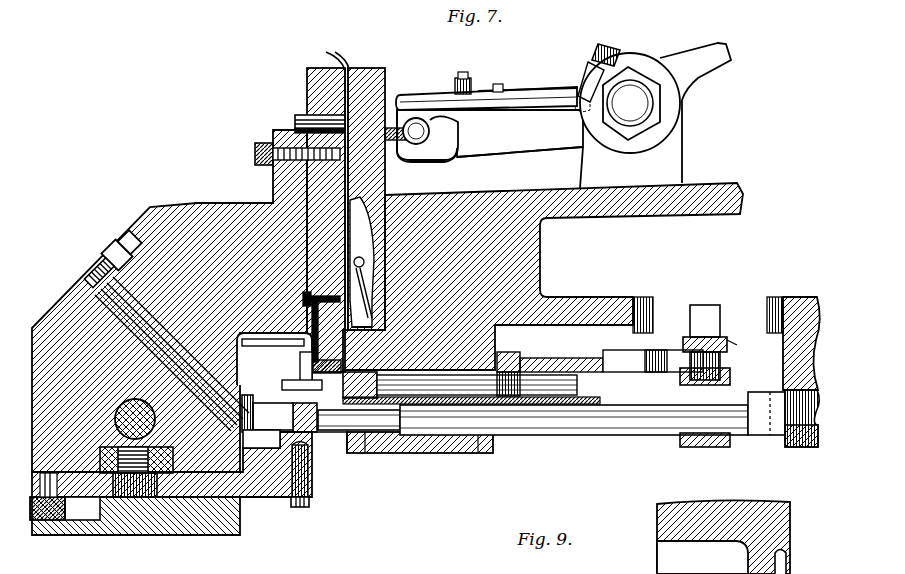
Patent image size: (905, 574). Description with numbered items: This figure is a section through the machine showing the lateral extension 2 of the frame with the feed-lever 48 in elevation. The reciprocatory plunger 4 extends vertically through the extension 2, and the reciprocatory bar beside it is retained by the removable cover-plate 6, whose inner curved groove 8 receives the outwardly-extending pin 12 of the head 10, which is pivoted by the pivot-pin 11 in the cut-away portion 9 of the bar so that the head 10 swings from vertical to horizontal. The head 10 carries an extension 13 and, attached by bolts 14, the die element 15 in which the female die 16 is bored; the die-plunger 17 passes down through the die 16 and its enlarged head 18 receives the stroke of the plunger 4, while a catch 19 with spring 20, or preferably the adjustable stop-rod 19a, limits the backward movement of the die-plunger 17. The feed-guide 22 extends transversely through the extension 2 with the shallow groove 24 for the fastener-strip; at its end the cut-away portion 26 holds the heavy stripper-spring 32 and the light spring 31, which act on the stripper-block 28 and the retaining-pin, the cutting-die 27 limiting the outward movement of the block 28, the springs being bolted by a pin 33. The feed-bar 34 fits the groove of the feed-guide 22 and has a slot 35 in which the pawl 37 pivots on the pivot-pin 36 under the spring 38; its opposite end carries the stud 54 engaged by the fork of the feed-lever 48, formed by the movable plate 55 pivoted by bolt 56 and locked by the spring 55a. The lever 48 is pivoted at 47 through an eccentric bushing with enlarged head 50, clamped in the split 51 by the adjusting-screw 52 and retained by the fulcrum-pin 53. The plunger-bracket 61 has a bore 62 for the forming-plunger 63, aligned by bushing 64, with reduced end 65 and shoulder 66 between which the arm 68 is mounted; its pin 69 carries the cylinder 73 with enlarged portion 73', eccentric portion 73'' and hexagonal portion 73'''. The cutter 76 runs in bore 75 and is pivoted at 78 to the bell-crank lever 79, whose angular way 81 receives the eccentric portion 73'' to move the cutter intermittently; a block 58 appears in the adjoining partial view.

In FIG. 7, the lateral extension 2 is at (190, 214).
In FIG. 7, the reciprocatory plunger 4 is at (115, 419).
In FIG. 7, the removable cover-plate 6 is at (221, 522).
In FIG. 7, the curved groove 8 is at (82, 520).
In FIG. 7, the cut-away portion 9 is at (165, 500).
In FIG. 7, the head 10 is at (243, 484).
In FIG. 7, the pivot-pin 11 is at (127, 497).
In FIG. 7, the outwardly-extending pin 12 is at (50, 522).
In FIG. 7, the extension 13 is at (272, 497).
In FIG. 7, the bolts 14 is at (309, 508).
In FIG. 7, the die element 15 is at (318, 455).
In FIG. 7, the female die 16 is at (320, 437).
In FIG. 7, the die-plunger 17 is at (242, 402).
In FIG. 7, the enlarged head 18 is at (259, 445).
In FIG. 7, the catch 19 is at (285, 404).
In FIG. 7, the adjustable stop-rod 19a is at (115, 248).
In FIG. 7, the spring 20 is at (296, 406).
In FIG. 7, the feed-guide 22 is at (318, 97).
In FIG. 7, the shallow groove 24 is at (345, 72).
In FIG. 7, the cut-away portion 26 is at (311, 312).
In FIG. 7, the cutting-die 27 is at (296, 388).
In FIG. 7, the stripper-block 28 is at (300, 360).
In FIG. 7, the light flat spring 31 is at (304, 342).
In FIG. 7, the stripper-spring 32 is at (274, 359).
In FIG. 7, the pin 33 is at (303, 284).
In FIG. 7, the feed-bar 34 is at (382, 84).
In FIG. 7, the slot 35 is at (386, 188).
In FIG. 7, the pivot-pin 36 is at (375, 250).
In FIG. 7, the pawl 37 is at (365, 264).
In FIG. 7, the spring 38 is at (372, 290).
In FIG. 7, the pivot 47 is at (681, 128).
In FIG. 7, the feed-lever 48 is at (542, 145).
In FIG. 7, the enlarged head 50 is at (650, 134).
In FIG. 7, the split 51 is at (582, 88).
In FIG. 7, the adjusting-screw 52 is at (596, 48).
In FIG. 7, the fulcrum-pin 53 is at (630, 120).
In FIG. 7, the round-headed stud 54 is at (433, 146).
In FIG. 7, the movable plate 55 is at (482, 100).
In FIG. 7, the spring 55a is at (522, 90).
In FIG. 7, the bolt 56 is at (465, 78).
In FIG. 9, the block 58 is at (702, 537).
In FIG. 7, the plunger-bracket 61 is at (444, 434).
In FIG. 7, the bore 62 is at (481, 442).
In FIG. 7, the forming-plunger 63 is at (549, 436).
In FIG. 7, the bushing 64 is at (386, 437).
In FIG. 7, the shoulder 65 is at (373, 437).
In FIG. 7, the shoulder 66 is at (762, 437).
In FIG. 7, the arm 68 is at (706, 448).
In FIG. 7, the laterally-extending pin 69 is at (721, 365).
In FIG. 7, the cylinder 73 is at (728, 347).
In FIG. 7, the round enlarged portion 73' is at (726, 379).
In FIG. 7, the eccentric portion 73'' is at (762, 357).
In FIG. 7, the hexagonal portion 73''' is at (730, 321).
In FIG. 7, the bore 75 is at (448, 437).
In FIG. 7, the reciprocatory cutter 76 is at (552, 388).
In FIG. 7, the pivotal connection 78 is at (540, 358).
In FIG. 7, the bell-crank lever 79 is at (590, 366).
In FIG. 7, the angular way 81 is at (652, 373).